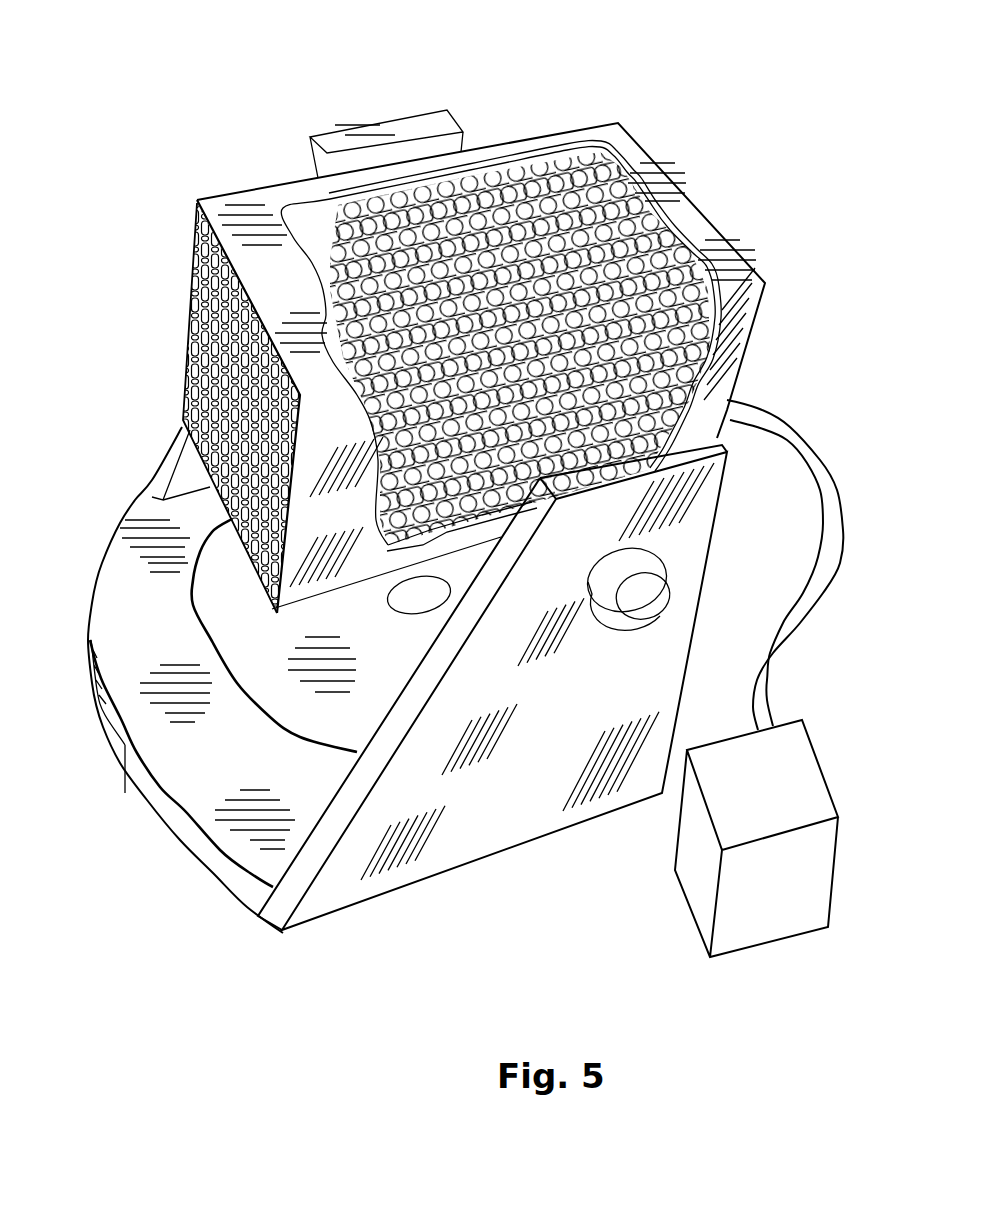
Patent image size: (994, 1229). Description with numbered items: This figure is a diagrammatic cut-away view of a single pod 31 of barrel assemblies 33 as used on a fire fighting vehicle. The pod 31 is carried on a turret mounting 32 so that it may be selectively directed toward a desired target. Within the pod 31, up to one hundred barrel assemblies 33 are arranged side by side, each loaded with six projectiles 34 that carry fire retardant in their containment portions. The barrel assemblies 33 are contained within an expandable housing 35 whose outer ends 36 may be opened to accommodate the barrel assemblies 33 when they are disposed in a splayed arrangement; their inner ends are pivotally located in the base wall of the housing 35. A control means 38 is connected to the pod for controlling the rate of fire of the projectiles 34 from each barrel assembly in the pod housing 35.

The pod 31 is at (567, 95).
The turret mounting 32 is at (395, 630).
The barrel assembly 33 is at (147, 340).
The projectile 34 is at (633, 270).
The expandable housing 35 is at (622, 146).
The outer ends 36 is at (215, 207).
The control means 38 is at (758, 885).